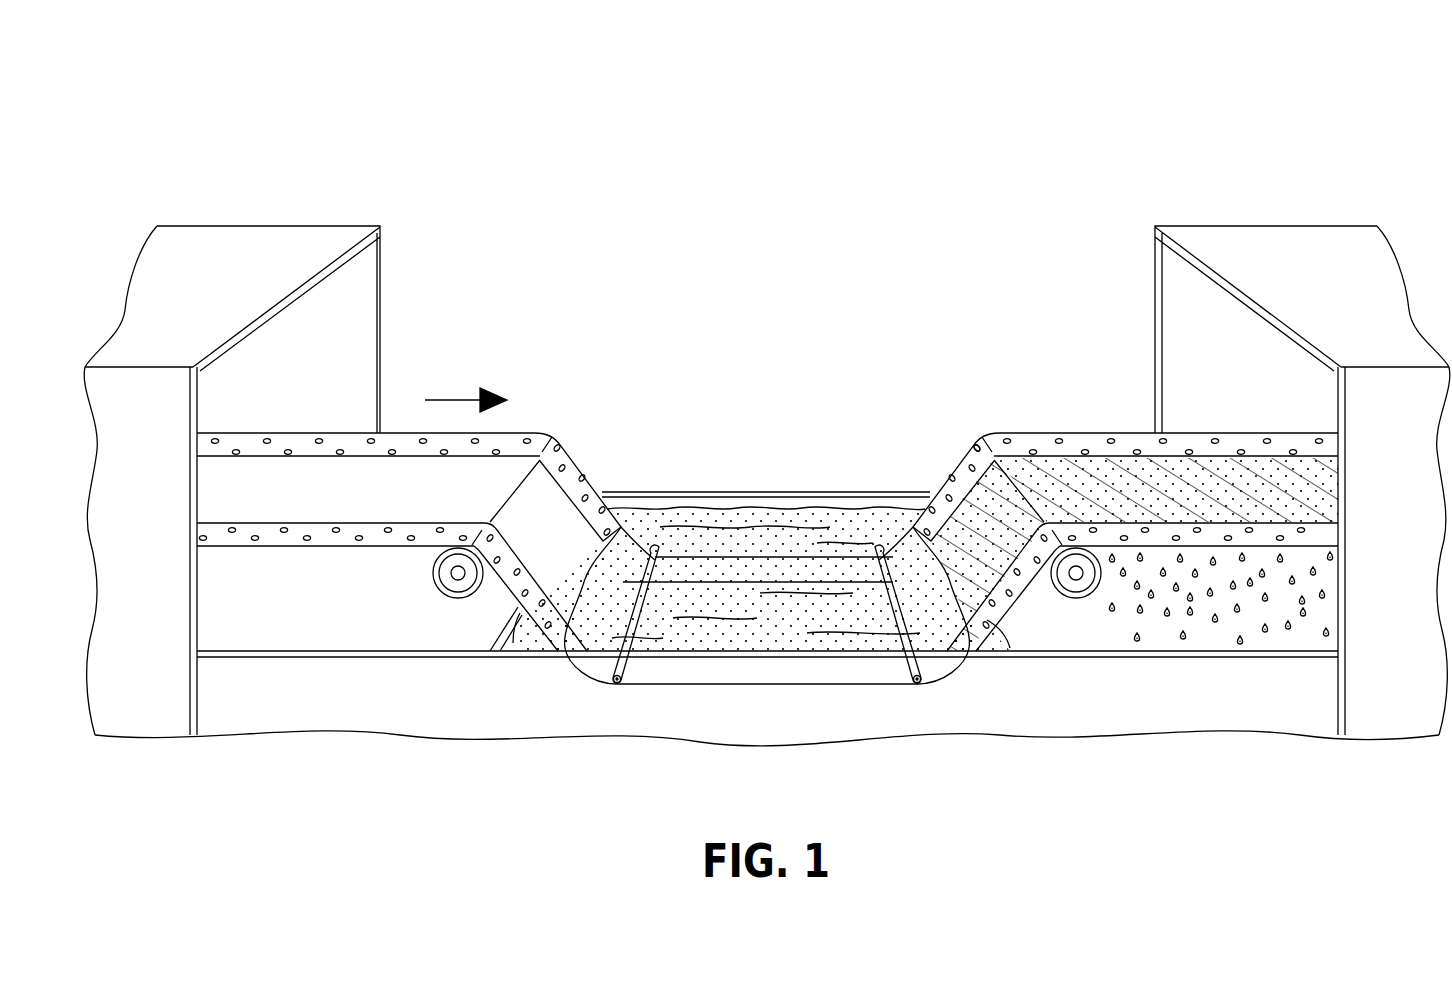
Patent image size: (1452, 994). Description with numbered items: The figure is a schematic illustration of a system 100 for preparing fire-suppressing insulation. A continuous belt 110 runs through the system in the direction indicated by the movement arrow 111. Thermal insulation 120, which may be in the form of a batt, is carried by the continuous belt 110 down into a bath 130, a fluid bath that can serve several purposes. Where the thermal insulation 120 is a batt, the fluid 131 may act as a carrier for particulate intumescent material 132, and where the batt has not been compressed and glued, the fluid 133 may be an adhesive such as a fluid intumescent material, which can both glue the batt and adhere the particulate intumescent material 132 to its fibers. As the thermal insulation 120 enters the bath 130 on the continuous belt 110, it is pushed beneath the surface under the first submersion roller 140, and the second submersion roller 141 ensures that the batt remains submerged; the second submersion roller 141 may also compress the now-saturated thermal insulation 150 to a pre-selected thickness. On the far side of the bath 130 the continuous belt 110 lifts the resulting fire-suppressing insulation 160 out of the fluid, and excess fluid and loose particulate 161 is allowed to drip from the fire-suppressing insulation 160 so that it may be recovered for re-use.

The system 100 is at (488, 160).
The continuous belt 110 is at (527, 432).
The movement arrow 111 is at (460, 400).
The thermal insulation 120 is at (596, 478).
The bath 130 is at (772, 508).
The fluid 131 is at (870, 517).
The particulate intumescent material 132 is at (742, 508).
The fluid 133 is at (788, 632).
The first submersion roller 140 is at (617, 684).
The second submersion roller 141 is at (918, 684).
The saturated thermal insulation 150 is at (788, 583).
The fire-suppressing insulation 160 is at (1020, 455).
The excess fluid and loose particulate 161 is at (1110, 608).